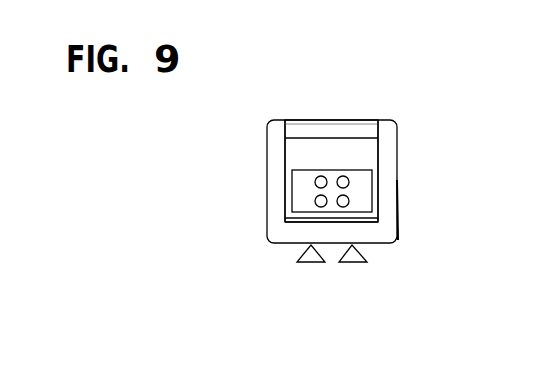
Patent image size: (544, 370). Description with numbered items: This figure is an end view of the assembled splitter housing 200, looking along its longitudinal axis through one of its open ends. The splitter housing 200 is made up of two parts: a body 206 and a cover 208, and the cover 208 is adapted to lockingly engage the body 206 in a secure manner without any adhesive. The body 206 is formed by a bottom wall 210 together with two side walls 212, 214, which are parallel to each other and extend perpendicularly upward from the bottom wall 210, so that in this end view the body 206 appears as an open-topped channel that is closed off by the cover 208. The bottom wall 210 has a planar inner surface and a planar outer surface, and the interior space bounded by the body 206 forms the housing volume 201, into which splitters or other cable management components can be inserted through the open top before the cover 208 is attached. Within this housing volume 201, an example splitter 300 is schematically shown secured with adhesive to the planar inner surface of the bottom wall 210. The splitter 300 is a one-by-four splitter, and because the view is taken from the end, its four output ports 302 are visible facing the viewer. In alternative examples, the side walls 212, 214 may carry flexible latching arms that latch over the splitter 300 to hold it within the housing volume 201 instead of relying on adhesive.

The splitter housing 200 is at (427, 103).
The housing volume 201 is at (368, 162).
The cover 208 is at (325, 127).
The side wall 214 is at (267, 173).
The side wall 212 is at (398, 205).
The body 206 is at (273, 203).
The splitter 300 is at (328, 171).
The output ports 302 is at (318, 181).
The bottom wall 210 is at (377, 244).